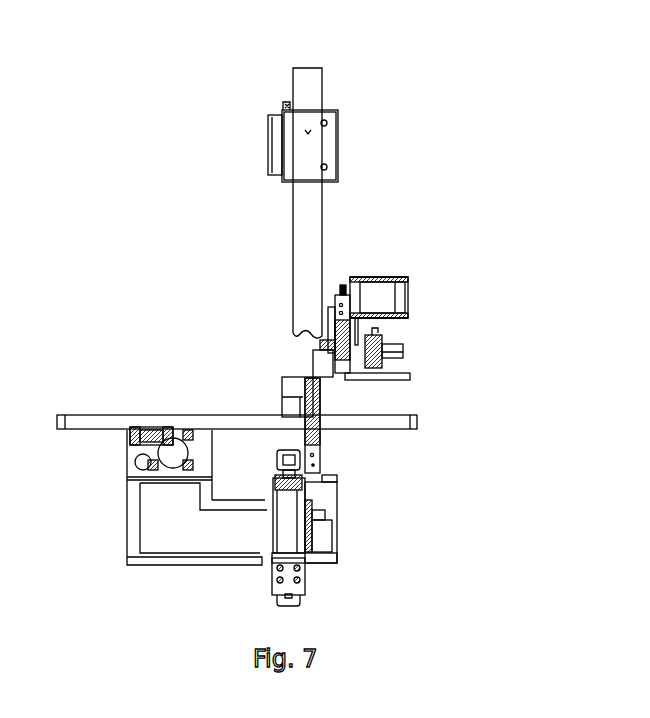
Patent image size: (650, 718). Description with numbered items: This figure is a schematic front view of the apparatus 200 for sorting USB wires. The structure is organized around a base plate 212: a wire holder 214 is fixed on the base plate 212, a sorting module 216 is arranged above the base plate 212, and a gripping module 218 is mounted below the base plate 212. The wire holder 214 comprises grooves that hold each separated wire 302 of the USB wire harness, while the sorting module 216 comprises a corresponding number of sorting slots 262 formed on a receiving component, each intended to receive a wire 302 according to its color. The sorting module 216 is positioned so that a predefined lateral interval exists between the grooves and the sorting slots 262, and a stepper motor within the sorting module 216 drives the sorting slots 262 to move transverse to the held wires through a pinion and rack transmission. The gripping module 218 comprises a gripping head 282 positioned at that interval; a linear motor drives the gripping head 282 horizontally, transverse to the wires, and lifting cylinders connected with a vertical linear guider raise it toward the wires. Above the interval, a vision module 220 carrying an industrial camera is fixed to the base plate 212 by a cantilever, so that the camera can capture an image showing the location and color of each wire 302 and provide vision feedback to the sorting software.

The apparatus for sorting USB wires 200 is at (172, 143).
The base plate 212 is at (156, 413).
The wire holder 214 is at (276, 391).
The sorting module 216 is at (425, 290).
The gripping module 218 is at (344, 541).
The vision module 220 is at (343, 146).
The sorting slots 262 is at (301, 360).
The gripping head 282 is at (324, 407).
The wire 302 is at (405, 366).